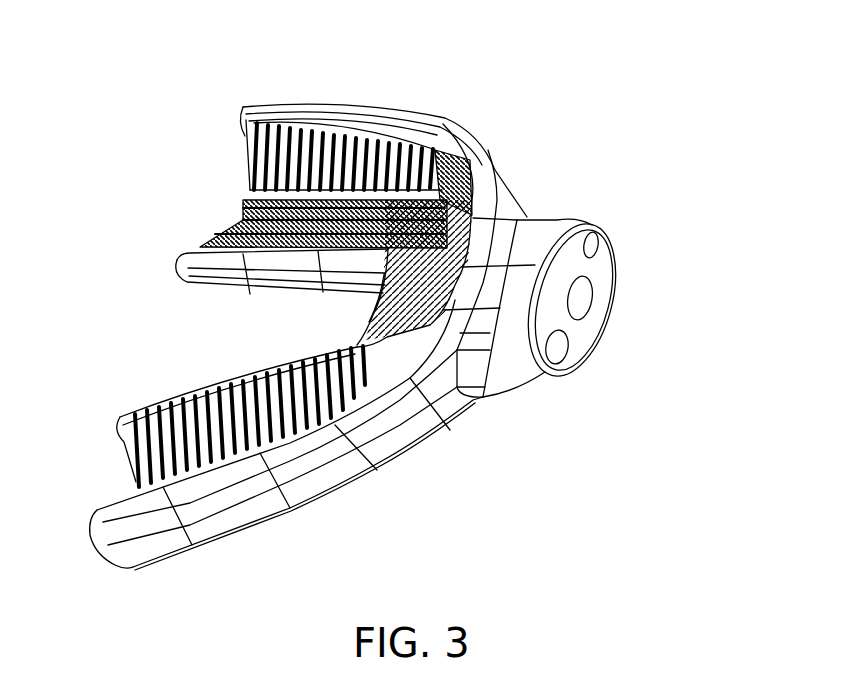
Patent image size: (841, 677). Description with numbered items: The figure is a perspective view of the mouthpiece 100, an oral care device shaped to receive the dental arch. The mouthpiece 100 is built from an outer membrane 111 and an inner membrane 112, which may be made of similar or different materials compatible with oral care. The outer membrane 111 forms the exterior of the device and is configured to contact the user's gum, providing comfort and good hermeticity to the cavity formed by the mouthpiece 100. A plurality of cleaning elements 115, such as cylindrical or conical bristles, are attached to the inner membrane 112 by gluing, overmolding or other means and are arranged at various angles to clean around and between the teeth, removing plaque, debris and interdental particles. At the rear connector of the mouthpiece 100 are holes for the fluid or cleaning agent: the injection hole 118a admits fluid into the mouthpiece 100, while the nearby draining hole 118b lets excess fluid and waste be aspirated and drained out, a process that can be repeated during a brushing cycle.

The mouthpiece 100 is at (545, 69).
The outer membrane 111 is at (403, 440).
The inner membrane 112 is at (284, 118).
The cleaning elements 115 is at (130, 446).
The injection hole 118a is at (594, 251).
The draining hole 118b is at (583, 300).